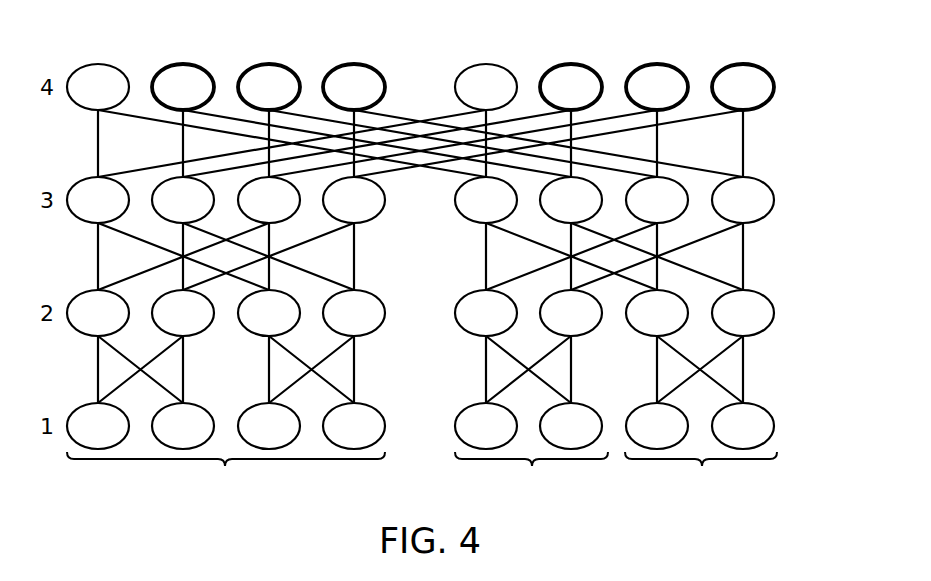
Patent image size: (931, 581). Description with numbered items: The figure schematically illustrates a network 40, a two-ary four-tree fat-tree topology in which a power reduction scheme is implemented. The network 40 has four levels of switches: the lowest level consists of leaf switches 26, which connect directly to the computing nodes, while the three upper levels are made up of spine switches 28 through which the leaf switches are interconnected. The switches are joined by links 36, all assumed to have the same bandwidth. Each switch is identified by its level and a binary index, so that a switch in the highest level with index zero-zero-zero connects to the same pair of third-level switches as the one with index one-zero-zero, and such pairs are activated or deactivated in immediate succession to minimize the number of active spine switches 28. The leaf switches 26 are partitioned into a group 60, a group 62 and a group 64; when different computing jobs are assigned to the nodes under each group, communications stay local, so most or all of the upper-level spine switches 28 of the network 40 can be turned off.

The network 40 is at (125, 24).
The spine switches 28 is at (774, 88).
The links 36 is at (743, 137).
The leaf switches 26 is at (774, 426).
The group of leaf switches 60 is at (226, 478).
The group of leaf switches 62 is at (531, 478).
The group of leaf switches 64 is at (701, 478).